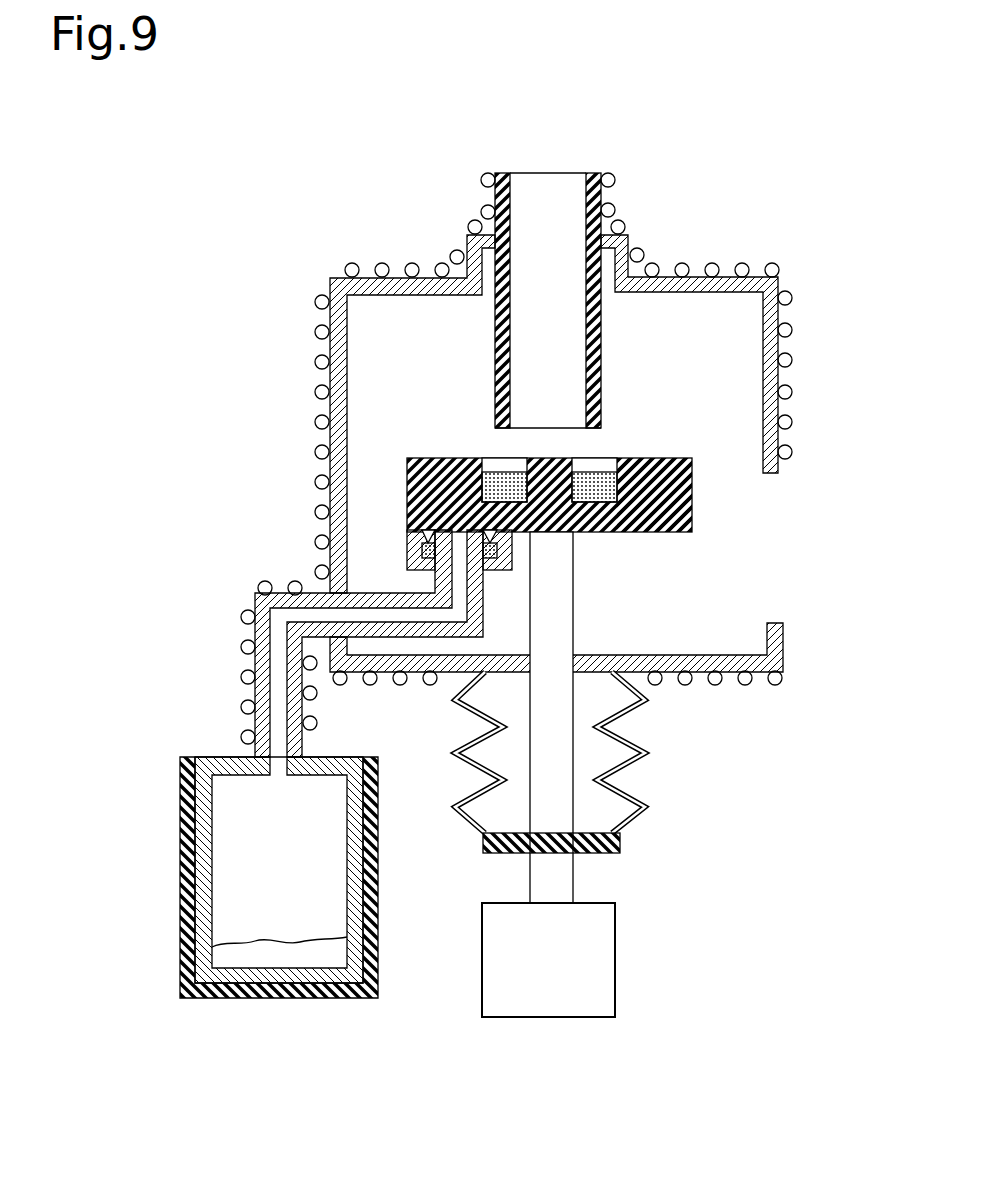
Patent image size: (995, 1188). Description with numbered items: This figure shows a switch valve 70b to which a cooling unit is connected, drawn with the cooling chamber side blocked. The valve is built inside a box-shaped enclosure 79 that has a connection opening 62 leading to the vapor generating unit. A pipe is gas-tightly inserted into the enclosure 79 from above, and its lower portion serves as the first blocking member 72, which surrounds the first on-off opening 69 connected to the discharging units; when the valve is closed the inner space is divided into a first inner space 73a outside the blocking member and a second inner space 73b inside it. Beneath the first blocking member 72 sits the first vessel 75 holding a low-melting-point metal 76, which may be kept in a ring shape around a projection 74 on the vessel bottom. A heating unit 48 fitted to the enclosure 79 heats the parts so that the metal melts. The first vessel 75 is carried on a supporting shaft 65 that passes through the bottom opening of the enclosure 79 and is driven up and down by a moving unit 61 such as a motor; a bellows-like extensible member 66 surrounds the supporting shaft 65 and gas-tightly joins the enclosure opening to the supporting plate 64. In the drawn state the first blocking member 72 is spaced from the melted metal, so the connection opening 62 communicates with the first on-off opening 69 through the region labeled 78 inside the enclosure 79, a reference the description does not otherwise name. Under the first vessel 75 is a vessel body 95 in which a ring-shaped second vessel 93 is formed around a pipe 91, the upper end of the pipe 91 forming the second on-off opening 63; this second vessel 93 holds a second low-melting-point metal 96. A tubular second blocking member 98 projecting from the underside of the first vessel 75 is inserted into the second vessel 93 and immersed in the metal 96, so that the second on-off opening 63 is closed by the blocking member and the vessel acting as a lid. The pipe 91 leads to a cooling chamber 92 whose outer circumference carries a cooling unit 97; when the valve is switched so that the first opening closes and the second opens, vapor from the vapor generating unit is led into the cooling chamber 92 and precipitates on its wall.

The switch valve 70b is at (180, 122).
The heating unit 48 is at (680, 265).
The enclosure 79 is at (752, 268).
The first blocking member 72 is at (602, 345).
The first inner space 73a is at (760, 346).
The second inner space 73b is at (567, 386).
The first on-off opening 69 is at (527, 428).
The low-melting-point metal 76 is at (492, 455).
The second on-off opening 63 is at (462, 547).
The projection 74 is at (565, 447).
The first vessel 75 is at (683, 457).
The connection opening 62 is at (753, 538).
The vaporizing space 78 is at (777, 563).
The low-melting-point metal 96 is at (425, 540).
The vessel body 95 is at (407, 558).
The second blocking member 98 is at (497, 538).
The second vessel 93 is at (497, 558).
The pipe 91 is at (272, 600).
The supporting shaft 65 is at (567, 637).
The cooling chamber 92 is at (218, 805).
The cooling unit 97 is at (185, 862).
The extensible member 66 is at (618, 790).
The supporting plate 64 is at (622, 843).
The moving unit 61 is at (616, 952).